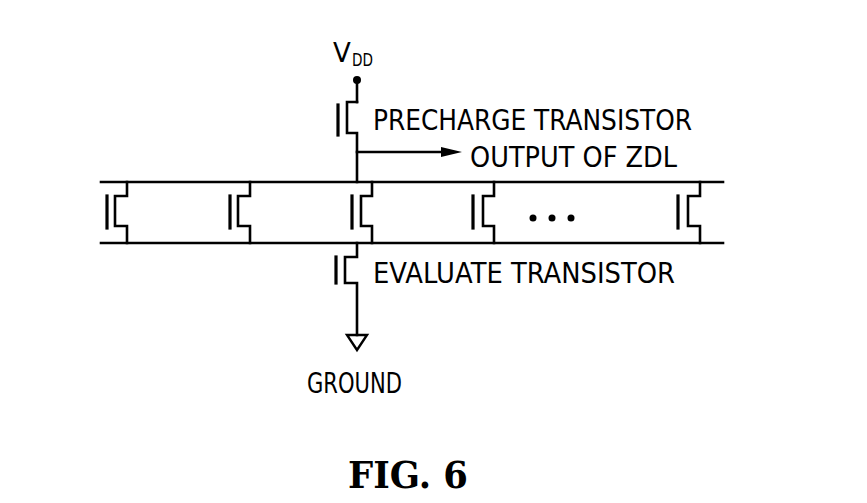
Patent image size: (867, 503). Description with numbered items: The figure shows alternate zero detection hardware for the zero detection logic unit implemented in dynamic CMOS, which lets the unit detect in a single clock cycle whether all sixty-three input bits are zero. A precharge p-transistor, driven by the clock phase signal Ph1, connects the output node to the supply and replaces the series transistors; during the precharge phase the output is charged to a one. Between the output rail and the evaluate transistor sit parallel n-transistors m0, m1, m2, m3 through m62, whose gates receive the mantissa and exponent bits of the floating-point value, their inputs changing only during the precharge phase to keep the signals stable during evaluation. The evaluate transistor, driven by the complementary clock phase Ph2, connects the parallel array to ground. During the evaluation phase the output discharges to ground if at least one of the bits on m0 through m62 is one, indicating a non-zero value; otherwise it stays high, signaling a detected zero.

The precharge transistor gate signal Ph1 is at (338, 119).
The evaluate transistor gate signal Ph2 is at (336, 272).
The match transistor m0 is at (107, 212).
The match transistor m1 is at (230, 212).
The match transistor m2 is at (352, 212).
The match transistor m3 is at (473, 212).
The match transistor m62 is at (678, 212).